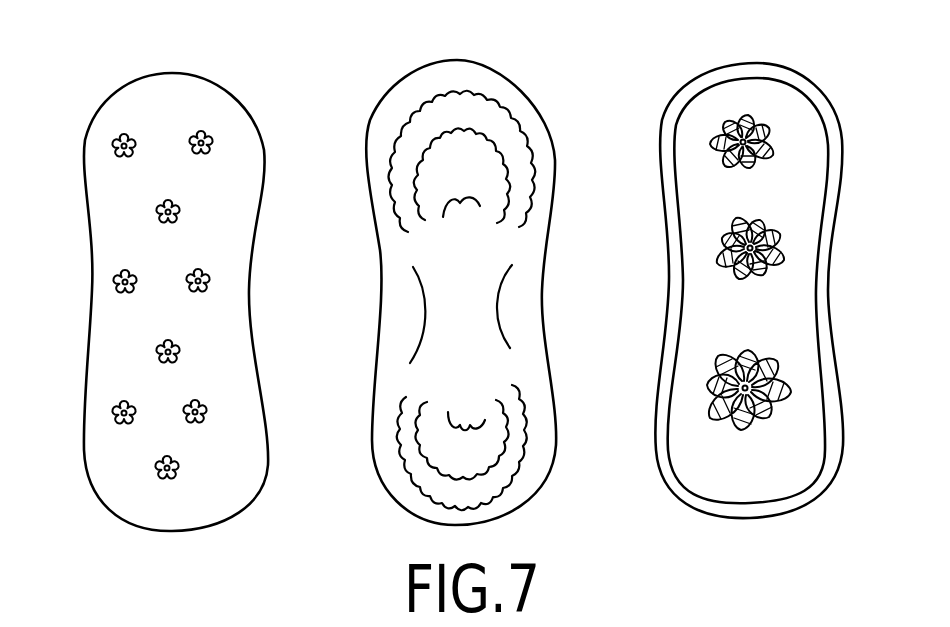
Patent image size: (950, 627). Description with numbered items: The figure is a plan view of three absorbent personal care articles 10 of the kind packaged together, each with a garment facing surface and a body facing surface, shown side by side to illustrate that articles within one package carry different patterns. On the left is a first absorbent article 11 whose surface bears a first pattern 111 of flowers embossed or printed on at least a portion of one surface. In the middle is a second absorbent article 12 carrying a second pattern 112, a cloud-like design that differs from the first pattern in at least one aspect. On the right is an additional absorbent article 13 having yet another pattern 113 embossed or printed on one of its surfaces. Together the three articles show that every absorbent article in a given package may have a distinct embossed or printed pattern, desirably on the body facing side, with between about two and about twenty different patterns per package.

The absorbent personal care article 10 is at (269, 62).
The first absorbent article 11 is at (68, 138).
The second absorbent article 12 is at (558, 117).
The additional absorbent article 13 is at (848, 100).
The first pattern 111 is at (216, 137).
The second pattern 112 is at (528, 191).
The another pattern 113 is at (758, 153).